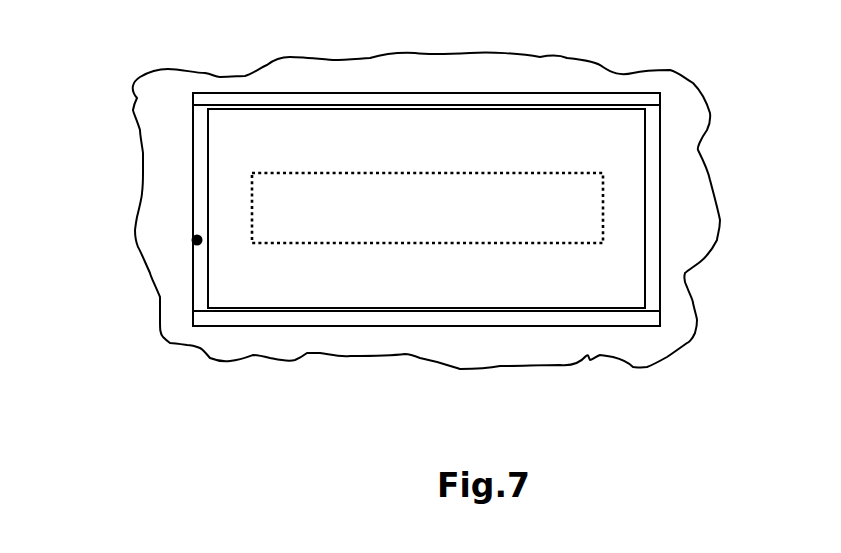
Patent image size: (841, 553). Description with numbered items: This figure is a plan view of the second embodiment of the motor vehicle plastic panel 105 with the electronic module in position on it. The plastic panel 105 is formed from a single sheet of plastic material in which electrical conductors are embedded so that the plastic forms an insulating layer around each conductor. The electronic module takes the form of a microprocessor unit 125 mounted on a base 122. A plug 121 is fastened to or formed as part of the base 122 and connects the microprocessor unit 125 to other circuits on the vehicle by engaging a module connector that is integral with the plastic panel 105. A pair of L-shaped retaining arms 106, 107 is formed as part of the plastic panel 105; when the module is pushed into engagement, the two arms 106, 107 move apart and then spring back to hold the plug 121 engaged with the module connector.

The plastic panel 105 is at (163, 336).
The retaining arm 106 is at (645, 91).
The retaining arm 107 is at (660, 325).
The plug 121 is at (250, 193).
The base 122 is at (197, 240).
The microprocessor unit 125 is at (208, 140).